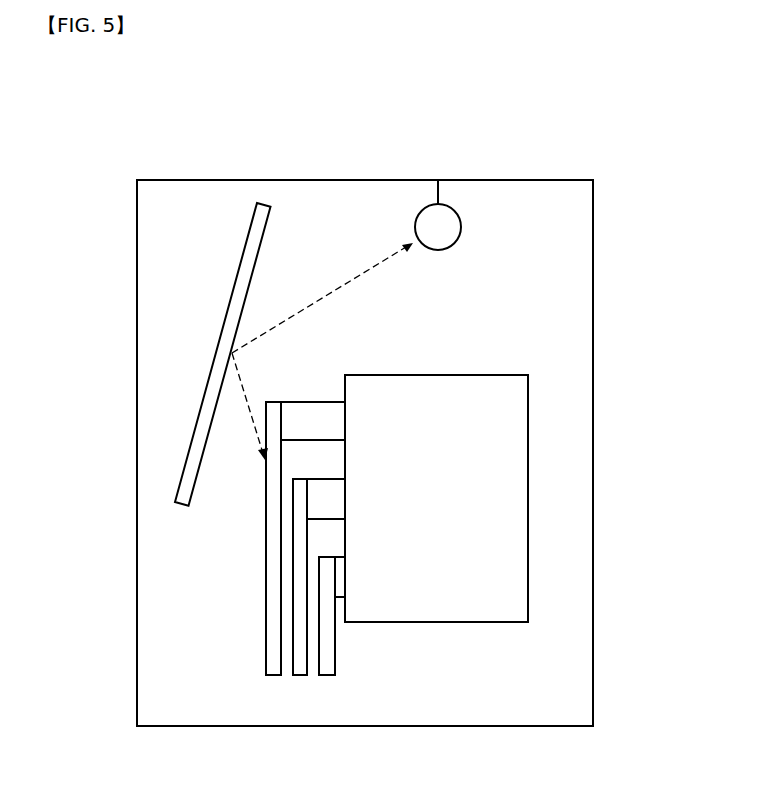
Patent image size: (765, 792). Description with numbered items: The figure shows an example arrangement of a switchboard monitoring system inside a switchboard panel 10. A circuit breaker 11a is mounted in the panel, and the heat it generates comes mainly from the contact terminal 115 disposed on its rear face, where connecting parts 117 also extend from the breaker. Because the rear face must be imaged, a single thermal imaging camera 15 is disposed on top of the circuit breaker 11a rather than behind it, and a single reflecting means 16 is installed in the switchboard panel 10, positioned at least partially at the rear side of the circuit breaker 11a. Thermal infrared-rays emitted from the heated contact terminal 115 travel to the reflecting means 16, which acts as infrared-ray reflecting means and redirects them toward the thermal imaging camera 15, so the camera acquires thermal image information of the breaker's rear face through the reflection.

The switchboard panel 10 is at (593, 203).
The circuit breaker 11a is at (529, 402).
The thermal imaging camera 15 is at (417, 212).
The reflecting means 16 is at (247, 228).
The contact terminal 115 is at (322, 499).
The connectors 117 is at (302, 593).